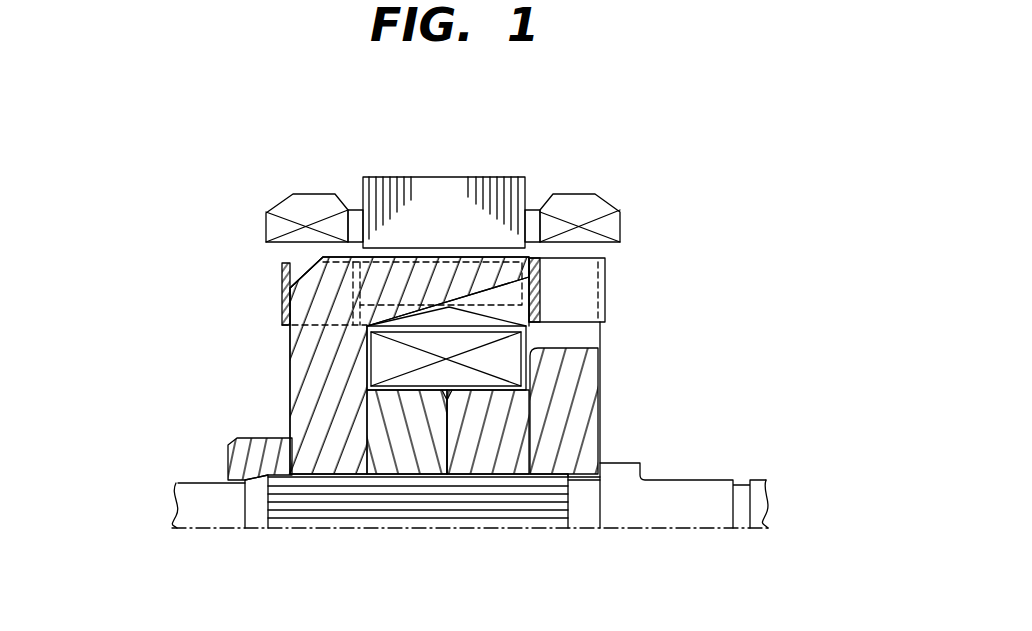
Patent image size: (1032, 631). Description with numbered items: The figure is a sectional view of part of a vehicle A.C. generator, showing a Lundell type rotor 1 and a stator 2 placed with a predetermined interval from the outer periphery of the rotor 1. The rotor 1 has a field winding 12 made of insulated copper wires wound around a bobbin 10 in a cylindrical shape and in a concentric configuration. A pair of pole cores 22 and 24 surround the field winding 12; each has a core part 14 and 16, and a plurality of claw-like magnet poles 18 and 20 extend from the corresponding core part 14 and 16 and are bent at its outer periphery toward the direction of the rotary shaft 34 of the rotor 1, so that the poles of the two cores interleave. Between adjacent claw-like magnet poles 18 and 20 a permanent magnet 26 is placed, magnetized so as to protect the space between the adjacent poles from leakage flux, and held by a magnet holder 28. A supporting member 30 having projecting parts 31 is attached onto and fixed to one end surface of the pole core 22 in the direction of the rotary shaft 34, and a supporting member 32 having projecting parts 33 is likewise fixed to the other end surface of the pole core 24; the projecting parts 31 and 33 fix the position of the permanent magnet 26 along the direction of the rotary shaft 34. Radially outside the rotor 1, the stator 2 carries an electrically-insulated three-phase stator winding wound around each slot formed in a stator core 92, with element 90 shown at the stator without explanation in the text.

The rotor 1 is at (238, 257).
The stator 2 is at (540, 147).
The bobbin 10 is at (525, 378).
The field winding 12 is at (525, 338).
The core part 14 is at (393, 465).
The core part 16 is at (517, 465).
The claw-like magnet pole 18 is at (378, 317).
The claw-like magnet pole 20 is at (513, 317).
The pole core 22 is at (312, 407).
The pole core 24 is at (567, 422).
The permanent magnet 26 is at (417, 277).
The magnet holder 28 is at (507, 294).
The supporting member 30 is at (282, 315).
The projecting part 31 is at (305, 260).
The supporting member 32 is at (605, 312).
The projecting part 33 is at (575, 259).
The rotary shaft 34 is at (683, 513).
The bearing 90 is at (598, 192).
The stator core 92 is at (392, 172).